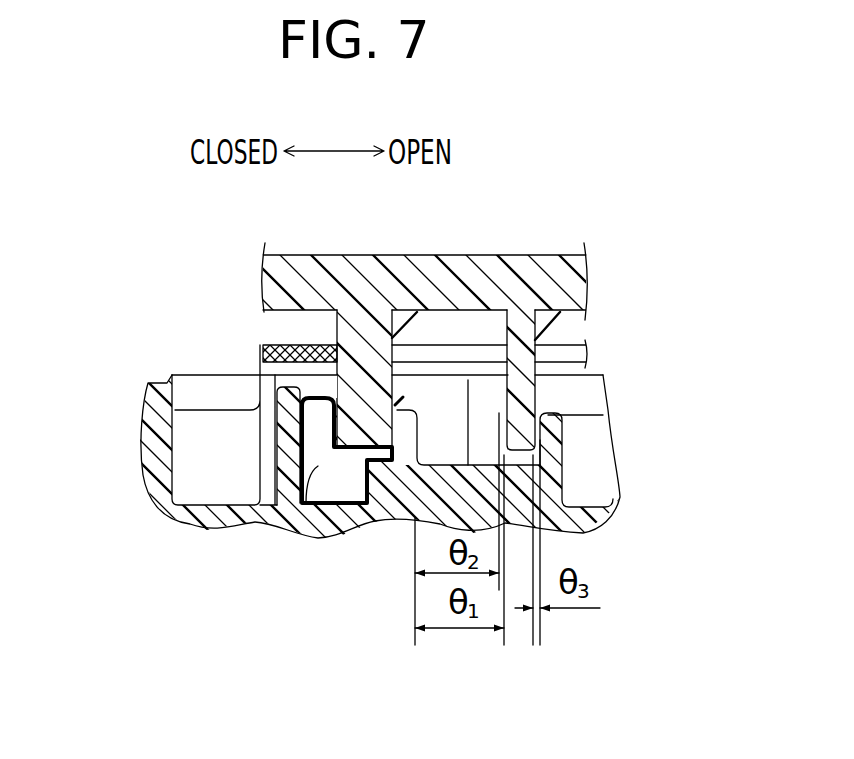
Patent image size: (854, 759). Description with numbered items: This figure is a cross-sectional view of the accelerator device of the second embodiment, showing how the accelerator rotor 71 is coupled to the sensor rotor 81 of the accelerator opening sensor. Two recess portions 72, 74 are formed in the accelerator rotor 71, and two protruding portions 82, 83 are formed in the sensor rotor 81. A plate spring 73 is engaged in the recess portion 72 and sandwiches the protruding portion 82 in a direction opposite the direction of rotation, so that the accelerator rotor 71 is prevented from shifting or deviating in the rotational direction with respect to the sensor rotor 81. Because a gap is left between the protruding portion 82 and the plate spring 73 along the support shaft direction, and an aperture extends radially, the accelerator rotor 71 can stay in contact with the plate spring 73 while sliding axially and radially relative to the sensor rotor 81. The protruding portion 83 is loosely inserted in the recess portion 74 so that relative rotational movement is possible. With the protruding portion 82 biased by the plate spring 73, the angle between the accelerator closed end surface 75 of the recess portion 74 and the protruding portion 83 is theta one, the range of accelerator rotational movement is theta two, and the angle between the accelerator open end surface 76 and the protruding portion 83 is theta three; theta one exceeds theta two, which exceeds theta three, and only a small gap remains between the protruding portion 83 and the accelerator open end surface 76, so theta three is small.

The accelerator rotor 71 is at (140, 461).
The recess portion 72 is at (328, 440).
The plate spring 73 is at (337, 437).
The recess portion 74 is at (420, 438).
The accelerator closed end surface 75 is at (417, 408).
The accelerator open end surface 76 is at (603, 415).
The sensor rotor 81 is at (468, 465).
The protruding portion 82 is at (350, 387).
The protruding portion 83 is at (528, 400).